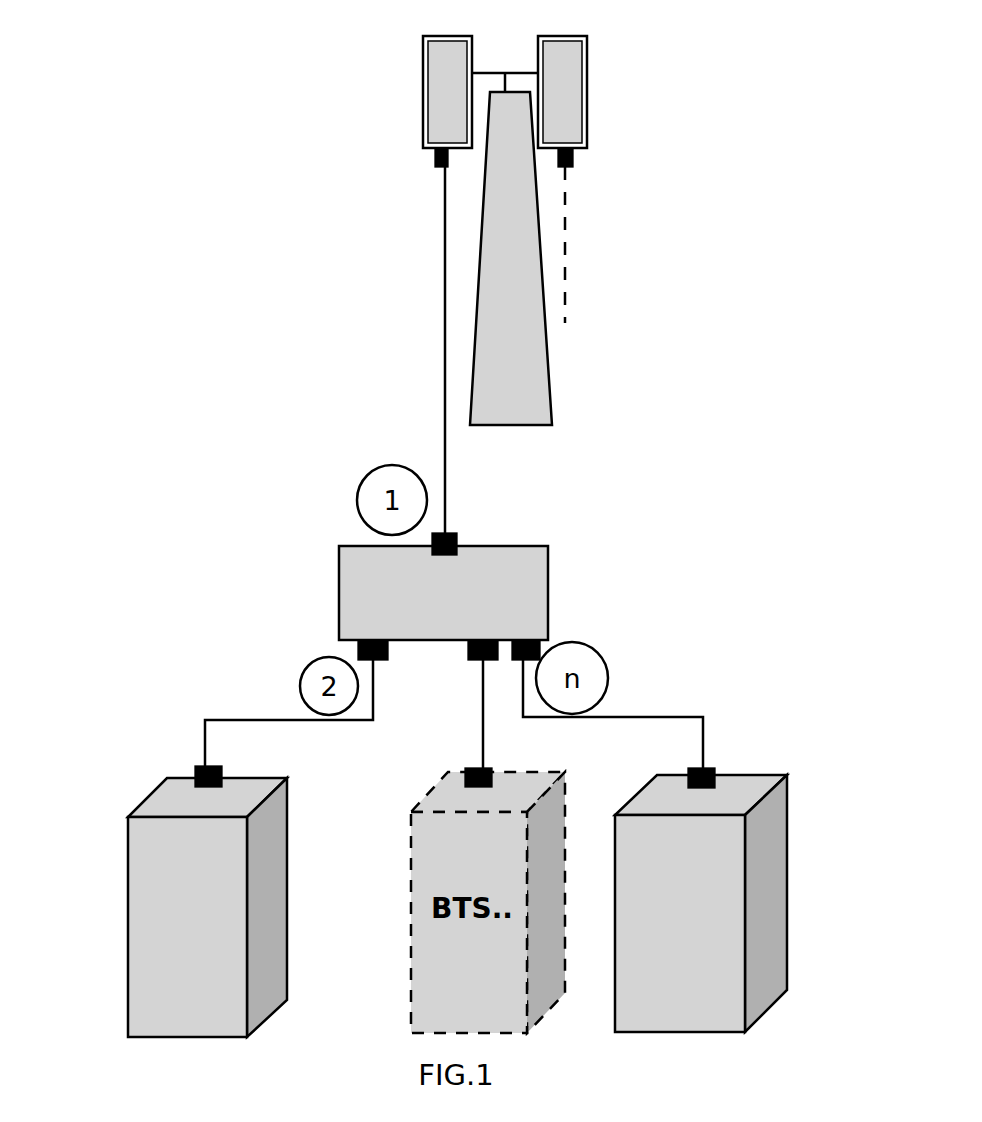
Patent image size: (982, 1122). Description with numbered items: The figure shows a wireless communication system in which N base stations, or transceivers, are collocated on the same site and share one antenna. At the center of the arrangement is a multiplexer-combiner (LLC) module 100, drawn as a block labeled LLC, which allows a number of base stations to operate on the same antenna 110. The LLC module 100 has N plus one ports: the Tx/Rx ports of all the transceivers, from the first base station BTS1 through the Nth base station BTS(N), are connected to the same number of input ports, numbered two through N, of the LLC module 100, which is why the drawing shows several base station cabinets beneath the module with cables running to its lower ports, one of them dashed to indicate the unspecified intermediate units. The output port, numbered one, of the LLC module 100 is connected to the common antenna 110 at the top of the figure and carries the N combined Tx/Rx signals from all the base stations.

The antenna 110 is at (422, 130).
The multiplexer-combiner (LLC) module 100 is at (552, 548).